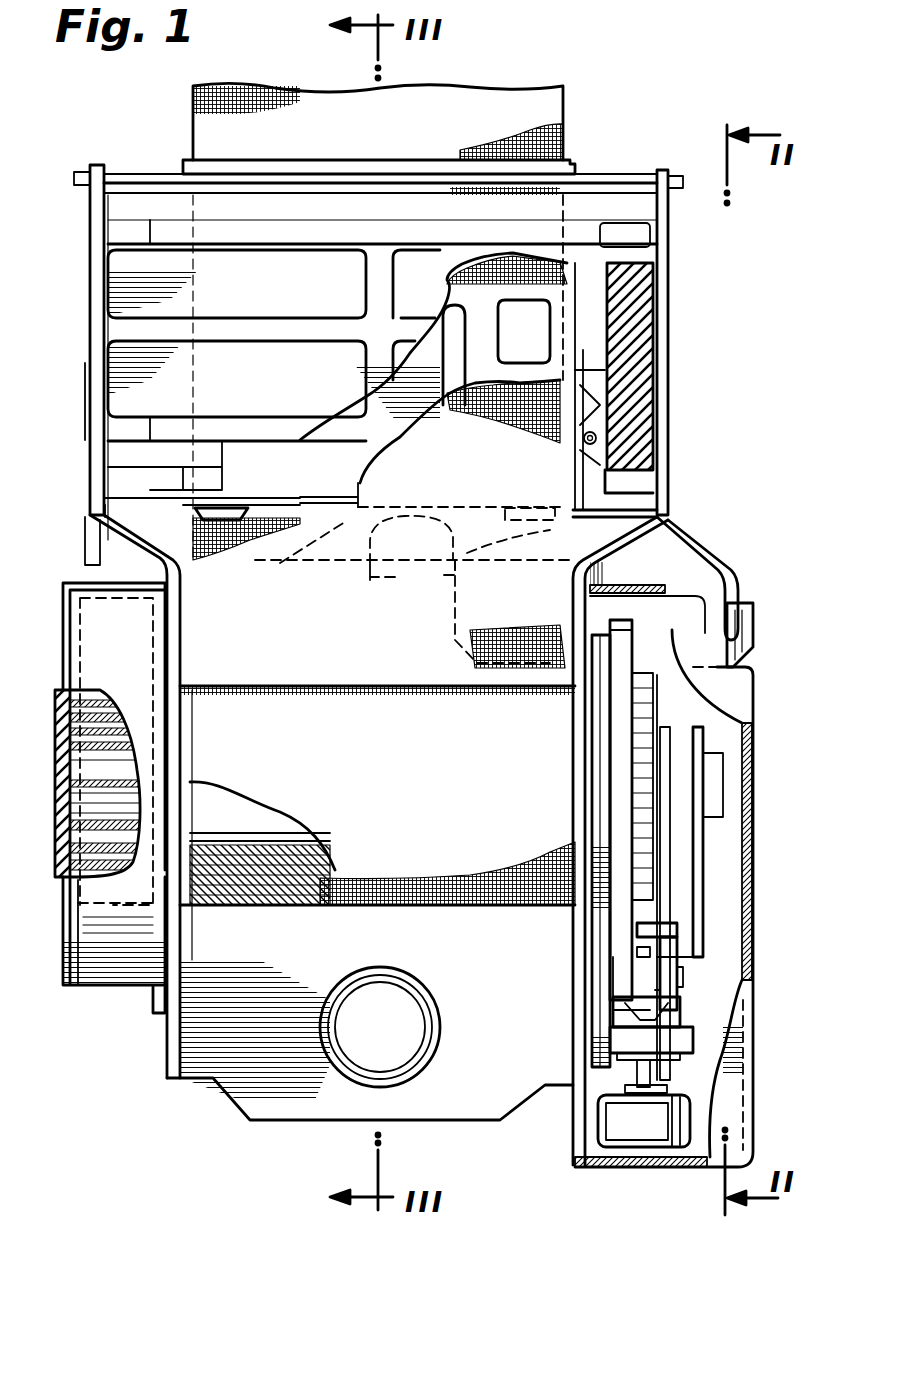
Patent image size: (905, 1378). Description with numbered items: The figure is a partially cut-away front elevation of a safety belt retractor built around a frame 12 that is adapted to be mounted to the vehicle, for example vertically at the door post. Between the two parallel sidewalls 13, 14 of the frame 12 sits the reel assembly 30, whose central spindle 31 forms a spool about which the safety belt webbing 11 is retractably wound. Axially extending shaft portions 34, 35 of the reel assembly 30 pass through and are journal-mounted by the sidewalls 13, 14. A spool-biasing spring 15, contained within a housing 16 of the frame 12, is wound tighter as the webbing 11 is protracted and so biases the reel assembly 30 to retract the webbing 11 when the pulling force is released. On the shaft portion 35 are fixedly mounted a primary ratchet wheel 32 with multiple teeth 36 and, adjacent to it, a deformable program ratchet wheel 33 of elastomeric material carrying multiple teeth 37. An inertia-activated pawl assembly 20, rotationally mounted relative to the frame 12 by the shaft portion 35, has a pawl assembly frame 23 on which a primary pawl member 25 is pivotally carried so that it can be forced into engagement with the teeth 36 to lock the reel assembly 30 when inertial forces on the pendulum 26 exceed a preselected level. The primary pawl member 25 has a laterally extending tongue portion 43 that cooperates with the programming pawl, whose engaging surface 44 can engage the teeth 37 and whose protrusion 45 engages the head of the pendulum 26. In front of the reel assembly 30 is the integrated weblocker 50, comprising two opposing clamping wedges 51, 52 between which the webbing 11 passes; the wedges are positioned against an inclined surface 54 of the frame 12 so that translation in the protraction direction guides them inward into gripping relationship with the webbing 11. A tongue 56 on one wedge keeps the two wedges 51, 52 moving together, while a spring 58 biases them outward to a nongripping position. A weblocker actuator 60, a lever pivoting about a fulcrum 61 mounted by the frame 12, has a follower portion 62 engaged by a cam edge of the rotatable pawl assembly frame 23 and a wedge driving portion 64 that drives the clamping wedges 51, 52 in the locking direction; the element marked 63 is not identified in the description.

The safety belt webbing 11 is at (222, 123).
The retractor frame 12 is at (662, 262).
The sidewall 13 is at (181, 648).
The sidewall 14 is at (578, 625).
The spool-biasing spring 15 is at (100, 697).
The housing 16 is at (72, 987).
The inertia-activated pawl assembly 20 is at (707, 938).
The pawl assembly frame 23 is at (753, 821).
The primary pawl member 25 is at (597, 1002).
The pendulum 26 is at (633, 1124).
The reel assembly 30 is at (286, 913).
The central spindle 31 is at (243, 806).
The primary ratchet wheel 32 is at (625, 929).
The deformable program ratchet wheel 33 is at (640, 780).
The shaft portion 34 is at (188, 762).
The shaft portion 35 is at (716, 765).
The teeth 36 is at (600, 971).
The teeth 37 is at (640, 804).
The tongue portion 43 is at (682, 975).
The engaging surface 44 is at (665, 918).
The protrusion 45 is at (650, 1010).
The weblocker 50 is at (679, 317).
The clamping wedge 51 is at (569, 297).
The clamping wedge 52 is at (313, 543).
The inclined surface 54 is at (180, 262).
The tongue 56 is at (577, 400).
The spring 58 is at (596, 437).
The weblocker actuator 60 is at (453, 627).
The fulcrum 61 is at (740, 630).
The follower portion 62 is at (637, 660).
The insert 63 is at (548, 652).
The wedge driving portion 64 is at (398, 586).